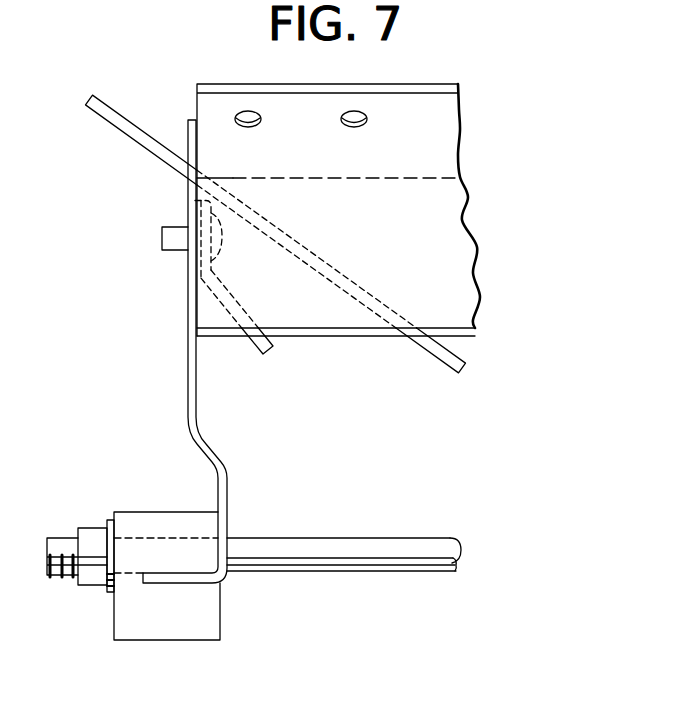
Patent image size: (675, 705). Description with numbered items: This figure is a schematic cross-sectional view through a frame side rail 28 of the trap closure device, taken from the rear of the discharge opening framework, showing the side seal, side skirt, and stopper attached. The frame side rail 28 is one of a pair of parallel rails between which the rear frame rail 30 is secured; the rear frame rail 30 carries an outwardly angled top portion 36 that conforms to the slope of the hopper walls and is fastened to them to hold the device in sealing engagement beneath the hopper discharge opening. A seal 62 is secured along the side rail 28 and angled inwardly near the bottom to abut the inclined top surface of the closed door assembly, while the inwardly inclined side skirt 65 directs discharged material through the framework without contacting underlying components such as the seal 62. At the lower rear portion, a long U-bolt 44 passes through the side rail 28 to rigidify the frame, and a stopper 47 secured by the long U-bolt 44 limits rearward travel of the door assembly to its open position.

The outwardly angled top portion 36 is at (438, 130).
The rear frame rail 30 is at (320, 312).
The frame side rail 28 is at (190, 357).
The seal 62 is at (217, 297).
The side skirt 65 is at (447, 357).
The long U-bolt 44 is at (340, 548).
The stopper 47 is at (125, 623).